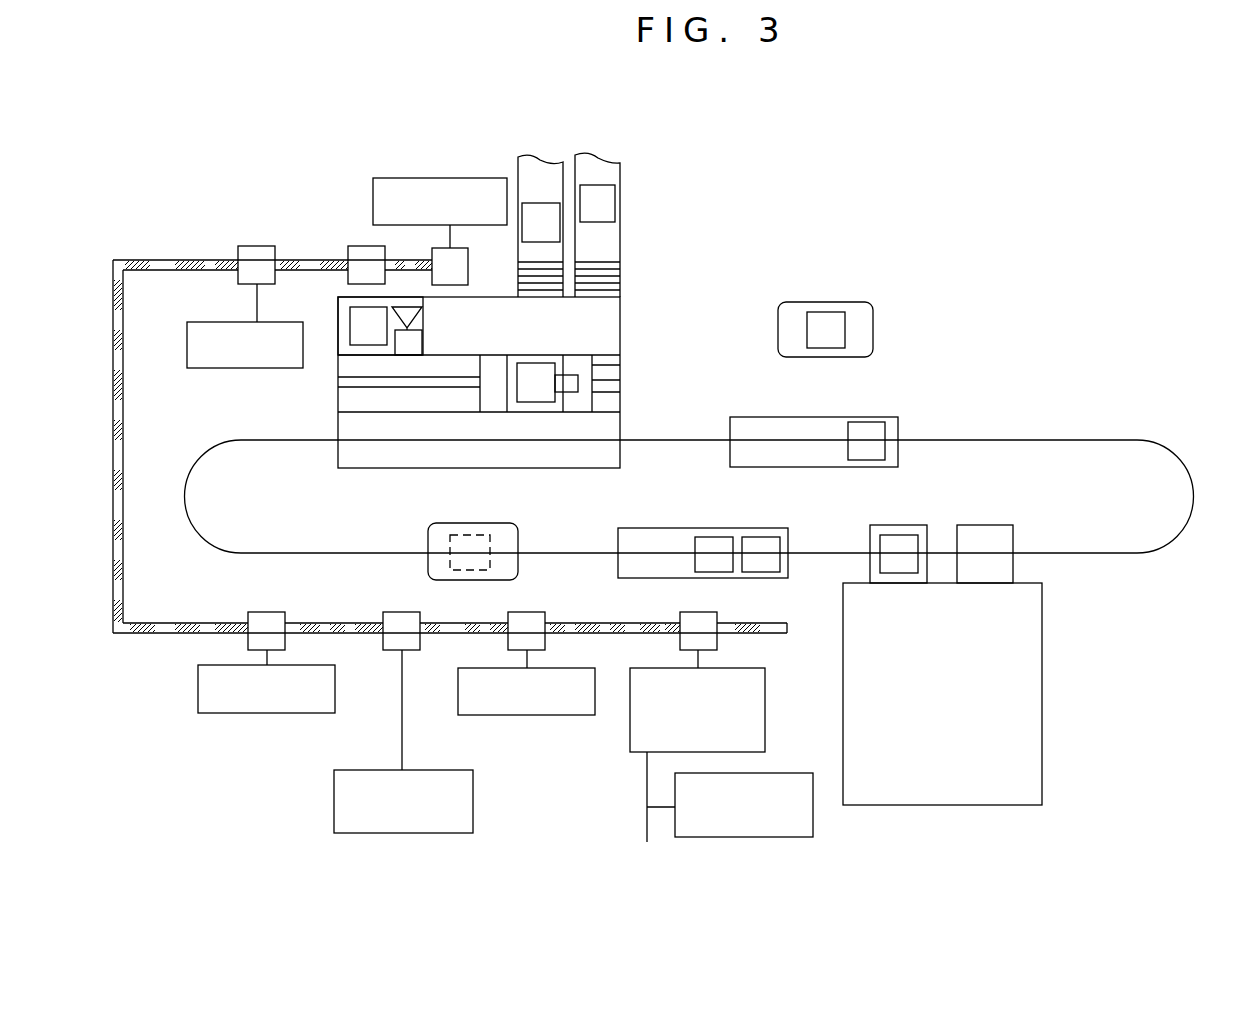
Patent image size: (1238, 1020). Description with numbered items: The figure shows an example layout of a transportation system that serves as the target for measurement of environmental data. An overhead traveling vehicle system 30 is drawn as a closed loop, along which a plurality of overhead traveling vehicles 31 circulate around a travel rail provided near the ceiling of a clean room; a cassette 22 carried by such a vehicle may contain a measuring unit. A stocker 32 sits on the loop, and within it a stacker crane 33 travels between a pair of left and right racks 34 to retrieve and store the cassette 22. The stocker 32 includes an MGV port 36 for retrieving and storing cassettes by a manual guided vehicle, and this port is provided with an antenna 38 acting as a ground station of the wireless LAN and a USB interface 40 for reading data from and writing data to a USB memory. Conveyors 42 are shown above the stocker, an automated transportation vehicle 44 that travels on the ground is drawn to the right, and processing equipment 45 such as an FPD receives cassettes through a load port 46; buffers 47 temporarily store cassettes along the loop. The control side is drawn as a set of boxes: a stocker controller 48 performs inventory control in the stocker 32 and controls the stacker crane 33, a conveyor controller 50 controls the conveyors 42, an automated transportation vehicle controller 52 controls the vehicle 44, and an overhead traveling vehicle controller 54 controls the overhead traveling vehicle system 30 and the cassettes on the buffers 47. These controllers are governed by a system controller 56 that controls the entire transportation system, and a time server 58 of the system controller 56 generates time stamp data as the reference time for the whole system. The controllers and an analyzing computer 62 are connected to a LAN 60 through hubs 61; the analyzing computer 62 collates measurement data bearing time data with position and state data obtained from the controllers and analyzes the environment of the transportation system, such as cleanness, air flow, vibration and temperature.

The cassette 22 is at (605, 203).
The overhead traveling vehicle system 30 is at (1062, 440).
The overhead traveling vehicle 31 is at (460, 523).
The stocker 32 is at (481, 401).
The stacker crane 33 is at (585, 397).
The rack 34 is at (605, 312).
The MGV port 36 is at (338, 310).
The antenna 38 is at (412, 322).
The USB interface 40 is at (418, 343).
The conveyor 42 is at (545, 242).
The automated transportation vehicle 44 is at (837, 302).
The processing equipment 45 is at (1032, 655).
The load port 46 is at (988, 540).
The buffer 47 is at (677, 536).
The stocker controller 48 is at (237, 360).
The conveyor controller 50 is at (443, 192).
The automated transportation vehicle controller 52 is at (290, 700).
The overhead traveling vehicle controller 54 is at (545, 707).
The system controller 56 is at (752, 705).
The time server 58 is at (735, 838).
The LAN 60 is at (128, 395).
The hub 61 is at (365, 262).
The analyzing computer 62 is at (400, 835).